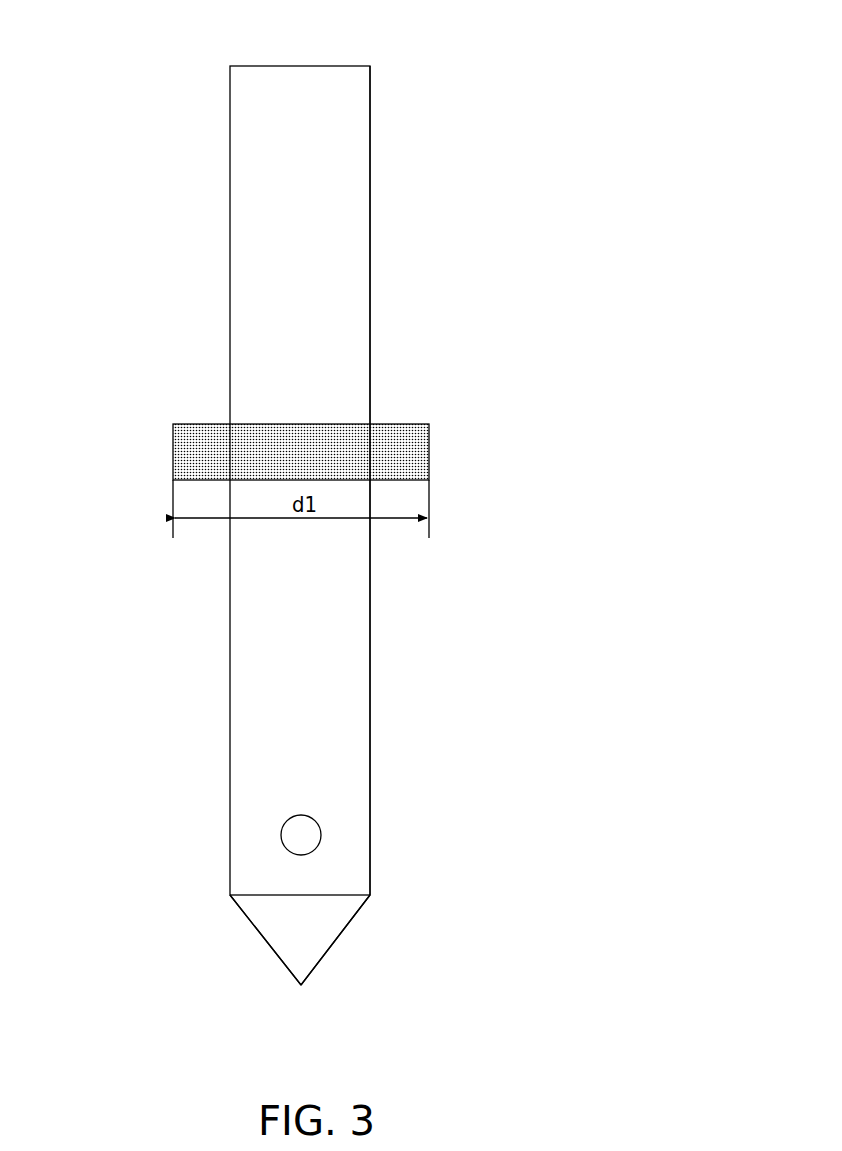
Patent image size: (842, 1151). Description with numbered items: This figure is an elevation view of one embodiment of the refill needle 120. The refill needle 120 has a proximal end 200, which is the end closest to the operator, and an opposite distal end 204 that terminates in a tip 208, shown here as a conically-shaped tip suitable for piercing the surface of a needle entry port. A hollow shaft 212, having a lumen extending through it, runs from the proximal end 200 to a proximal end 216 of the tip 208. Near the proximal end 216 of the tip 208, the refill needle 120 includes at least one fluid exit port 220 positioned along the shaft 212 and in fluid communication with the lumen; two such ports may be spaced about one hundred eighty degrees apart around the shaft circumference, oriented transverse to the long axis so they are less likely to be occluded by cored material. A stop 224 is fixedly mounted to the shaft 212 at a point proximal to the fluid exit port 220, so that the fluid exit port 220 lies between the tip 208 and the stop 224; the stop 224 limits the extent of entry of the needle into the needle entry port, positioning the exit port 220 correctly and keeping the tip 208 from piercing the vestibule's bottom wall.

The refill needle 120 is at (118, 217).
The proximal end 200 is at (370, 66).
The distal end 204 is at (299, 988).
The tip 208 is at (341, 913).
The hollow shaft 212 is at (337, 284).
The proximal end of the tip 216 is at (230, 895).
The fluid exit port 220 is at (313, 832).
The stop 224 is at (429, 452).